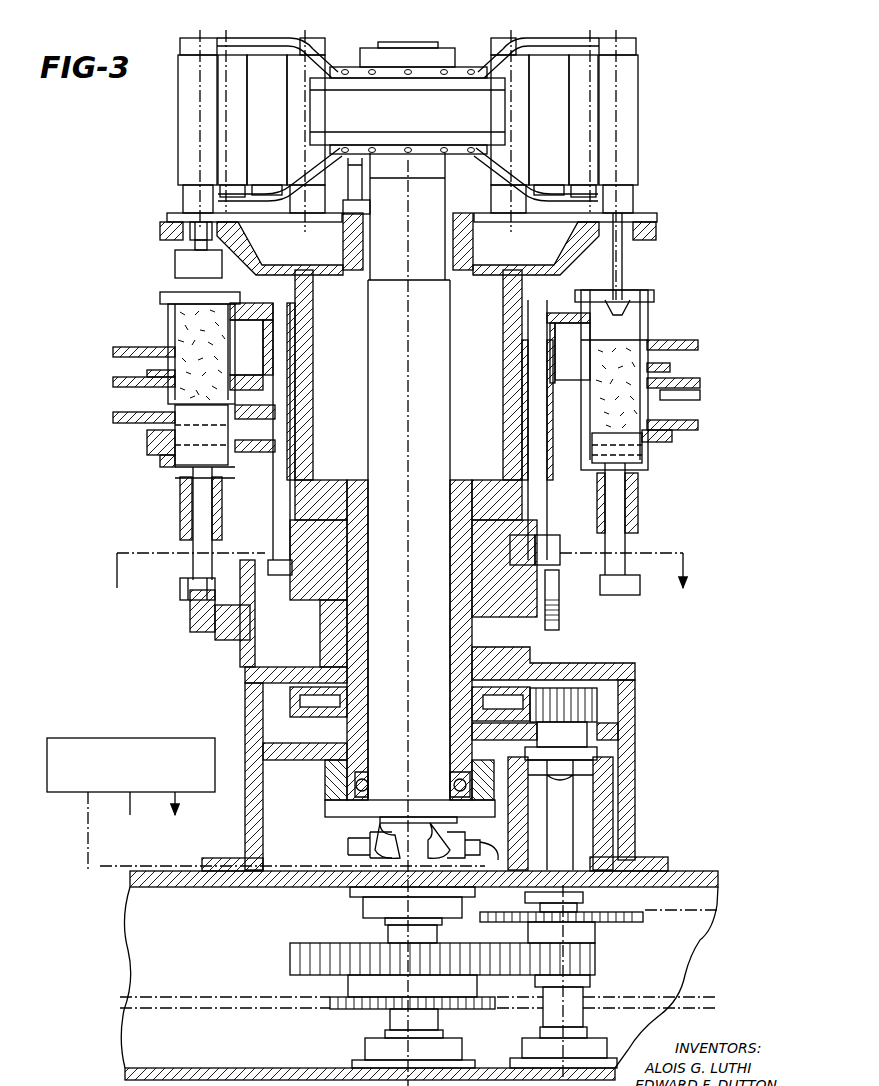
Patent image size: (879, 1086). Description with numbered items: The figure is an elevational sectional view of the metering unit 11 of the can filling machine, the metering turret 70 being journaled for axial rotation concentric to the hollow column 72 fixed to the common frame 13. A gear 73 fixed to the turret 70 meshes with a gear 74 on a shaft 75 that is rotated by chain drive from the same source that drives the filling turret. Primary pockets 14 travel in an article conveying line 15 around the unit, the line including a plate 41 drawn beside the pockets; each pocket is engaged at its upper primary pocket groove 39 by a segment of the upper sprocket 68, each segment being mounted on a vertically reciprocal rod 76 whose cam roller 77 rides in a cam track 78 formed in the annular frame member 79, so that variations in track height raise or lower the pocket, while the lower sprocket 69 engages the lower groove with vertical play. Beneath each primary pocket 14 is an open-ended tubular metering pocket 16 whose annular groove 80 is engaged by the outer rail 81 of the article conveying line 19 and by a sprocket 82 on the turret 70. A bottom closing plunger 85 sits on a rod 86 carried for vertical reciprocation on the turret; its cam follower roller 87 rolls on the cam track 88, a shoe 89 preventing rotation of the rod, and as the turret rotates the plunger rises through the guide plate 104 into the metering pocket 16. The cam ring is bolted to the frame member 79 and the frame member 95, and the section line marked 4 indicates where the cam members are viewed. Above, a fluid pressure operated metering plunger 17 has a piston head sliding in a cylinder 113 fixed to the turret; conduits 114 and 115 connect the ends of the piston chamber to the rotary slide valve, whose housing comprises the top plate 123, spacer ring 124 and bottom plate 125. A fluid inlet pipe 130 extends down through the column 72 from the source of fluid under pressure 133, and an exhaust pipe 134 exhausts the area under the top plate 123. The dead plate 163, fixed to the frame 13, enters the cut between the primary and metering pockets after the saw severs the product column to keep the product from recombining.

The metering unit 11 is at (672, 150).
The common frame 13 is at (718, 872).
The primary pocket 14 is at (167, 333).
The article conveying line 15 is at (112, 363).
The metering pocket 16 is at (153, 450).
The metering plunger 17 is at (172, 263).
The article conveying line 19 is at (116, 421).
The upper primary pocket groove 39 is at (165, 308).
The plate 41 is at (148, 354).
The upper sprocket 68 is at (272, 308).
The lower sprocket 69 is at (255, 381).
The metering turret 70 is at (318, 404).
The hollow column 72 is at (445, 433).
The gear 73 is at (512, 692).
The gear 74 is at (590, 713).
The shaft 75 is at (573, 822).
The vertically reciprocal rod 76 is at (528, 448).
The cam roller 77 is at (522, 540).
The cam track 78 is at (512, 567).
The annular frame member 79 is at (517, 613).
The annular groove 80 is at (168, 412).
The outer rail 81 is at (697, 431).
The sprocket 82 is at (258, 426).
The bottom closing plunger 85 is at (175, 480).
The rod 86 is at (195, 522).
The cam follower roller 87 is at (120, 426).
The cam track 88 is at (234, 636).
The shoe 89 is at (190, 617).
The frame member 95 is at (635, 709).
The guide plate 104 is at (155, 470).
The cylinder 113 is at (178, 122).
The conduit 114 is at (268, 44).
The conduit 115 is at (270, 187).
The top plate 123 is at (438, 50).
The spacer ring 124 is at (372, 115).
The bottom plate 125 is at (455, 133).
The fluid inlet pipe 130 is at (470, 851).
The source of fluid under pressure 133 is at (141, 738).
The exhaust pipe 134 is at (372, 850).
The dead plate 163 is at (680, 398).
The section line 4- 4 is at (400, 584).